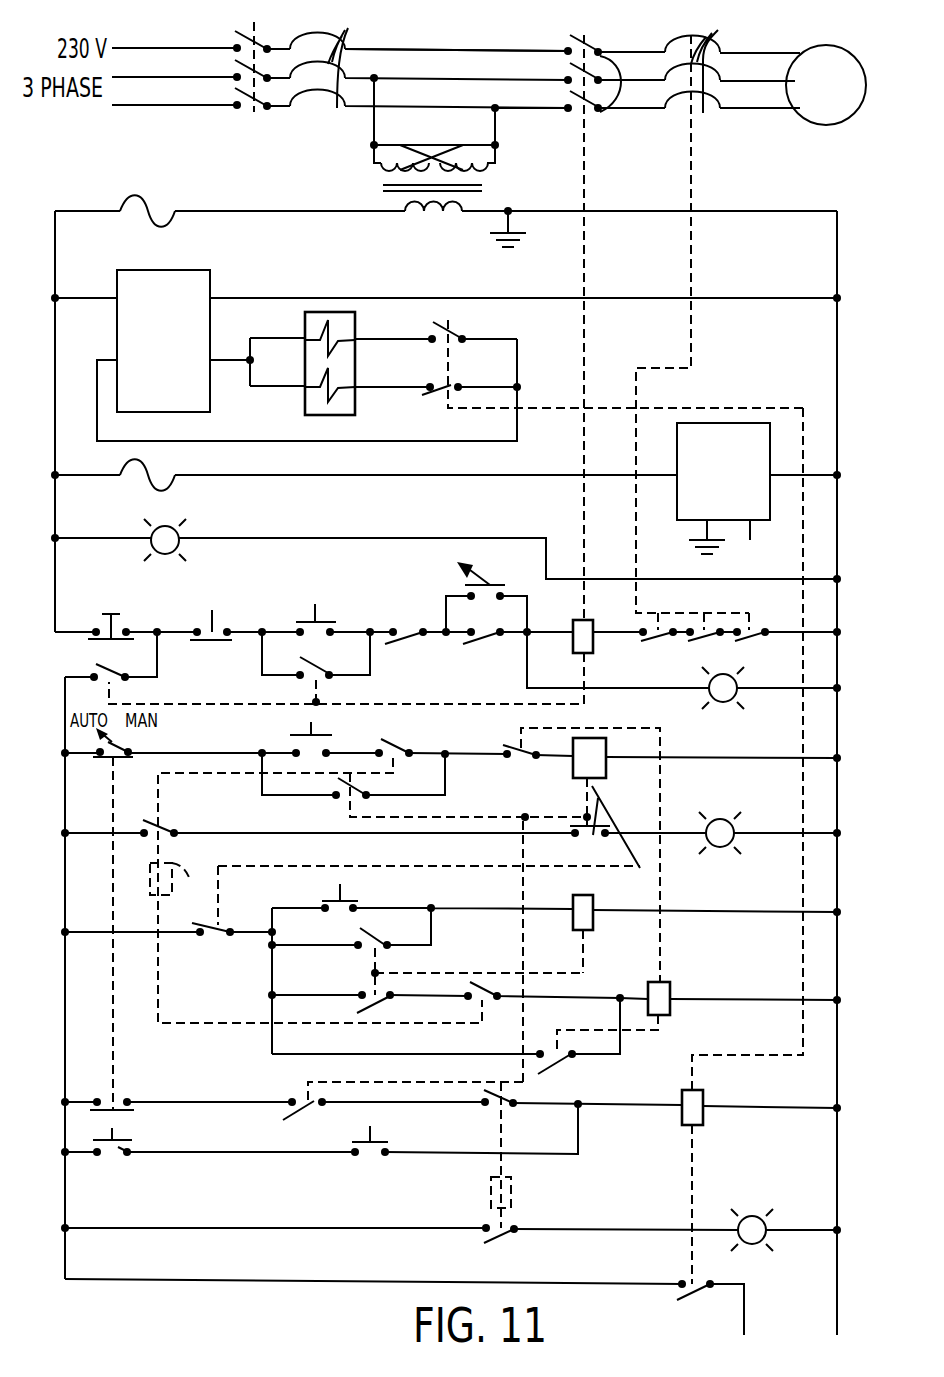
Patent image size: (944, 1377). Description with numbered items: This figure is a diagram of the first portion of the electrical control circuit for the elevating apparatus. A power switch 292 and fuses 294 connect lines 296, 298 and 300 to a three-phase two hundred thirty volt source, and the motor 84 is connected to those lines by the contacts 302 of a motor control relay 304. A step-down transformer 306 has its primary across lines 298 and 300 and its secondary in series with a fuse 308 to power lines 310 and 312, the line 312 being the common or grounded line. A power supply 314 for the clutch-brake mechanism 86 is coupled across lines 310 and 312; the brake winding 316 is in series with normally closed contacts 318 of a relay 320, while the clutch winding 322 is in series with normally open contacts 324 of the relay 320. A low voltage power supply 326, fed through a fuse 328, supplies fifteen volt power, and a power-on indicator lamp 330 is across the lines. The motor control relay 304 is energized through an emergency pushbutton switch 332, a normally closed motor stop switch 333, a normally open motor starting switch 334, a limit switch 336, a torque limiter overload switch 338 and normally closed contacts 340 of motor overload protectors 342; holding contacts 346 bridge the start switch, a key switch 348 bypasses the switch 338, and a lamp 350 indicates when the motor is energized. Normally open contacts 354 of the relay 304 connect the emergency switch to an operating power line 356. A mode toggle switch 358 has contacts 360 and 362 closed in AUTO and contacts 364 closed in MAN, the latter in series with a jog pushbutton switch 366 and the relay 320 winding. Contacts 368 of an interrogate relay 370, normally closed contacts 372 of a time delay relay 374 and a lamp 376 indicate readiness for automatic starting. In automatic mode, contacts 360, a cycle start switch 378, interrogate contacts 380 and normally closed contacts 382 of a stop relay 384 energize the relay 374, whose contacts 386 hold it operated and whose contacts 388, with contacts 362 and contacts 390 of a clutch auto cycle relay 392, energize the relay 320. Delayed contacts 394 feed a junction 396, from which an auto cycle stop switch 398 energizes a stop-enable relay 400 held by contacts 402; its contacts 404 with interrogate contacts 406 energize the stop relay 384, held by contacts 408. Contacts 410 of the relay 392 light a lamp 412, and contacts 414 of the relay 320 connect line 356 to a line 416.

The motor 84 is at (823, 107).
The clutch-brake mechanism 86 is at (325, 312).
The power switch 292 is at (248, 113).
The fuses 294 is at (354, 63).
The line 296 is at (439, 49).
The line 298 is at (508, 82).
The line 300 is at (403, 108).
The contacts of motor control relay 302 is at (594, 47).
The motor control relay 304 is at (590, 622).
The step-down transformer 306 is at (380, 188).
The fuse 308 is at (152, 213).
The power line 310 is at (57, 233).
The power line 312 is at (837, 262).
The power supply 314 is at (208, 282).
The brake winding 316 is at (330, 390).
The normally closed contacts 318 is at (450, 382).
The relay 320 is at (702, 1104).
The clutch winding 322 is at (320, 335).
The normally open contacts 324 is at (472, 322).
The low voltage power supply 326 is at (765, 434).
The fuse 328 is at (128, 472).
The power-on indicator lamp 330 is at (183, 530).
The emergency pushbutton switch 332 is at (118, 630).
The motor stop pushbutton switch 333 is at (218, 630).
The motor starting pushbutton switch 334 is at (320, 630).
The limit switch 336 is at (404, 642).
The torque limiter overload sensing switch 338 is at (480, 642).
The normally closed contacts 340 is at (744, 650).
The motor overload protectors 342 is at (693, 325).
The holding contacts 346 is at (297, 664).
The key switch 348 is at (487, 586).
The lamp 350 is at (723, 702).
The normally open contacts 354 is at (95, 665).
The operating power line 356 is at (65, 815).
The mode toggle switch 358 is at (108, 907).
The contacts 360 is at (119, 758).
The contacts 362 is at (118, 1100).
The contacts 364 is at (133, 1147).
The jog pushbutton switch 366 is at (371, 1158).
The normally open contacts 368 is at (140, 824).
The interrogate relay 370 is at (181, 883).
The normally closed contacts 372 is at (600, 820).
The time delay relay 374 is at (573, 776).
The lamp 376 is at (727, 843).
The cycle start pushbutton switch 378 is at (318, 750).
The normally open contacts 380 is at (395, 742).
The normally closed contacts 382 is at (508, 748).
The stop relay 384 is at (670, 983).
The normally open contacts 386 is at (342, 802).
The normally open contacts 388 is at (282, 1115).
The normally open contacts 390 is at (493, 1108).
The clutch auto cycle relay 392 is at (535, 1203).
The normally open contacts 394 is at (220, 928).
The junction 396 is at (268, 972).
The auto cycle stop pushbutton switch 398 is at (350, 912).
The stop-enable relay 400 is at (585, 915).
The normally open contacts 402 is at (353, 937).
The normally open contacts 404 is at (366, 988).
The normally open contacts 406 is at (466, 1000).
The normally open contacts 408 is at (553, 1067).
The normally open contacts 410 is at (484, 1237).
The lamp 412 is at (752, 1222).
The normally open contacts 414 is at (675, 1293).
The line 416 is at (744, 1291).